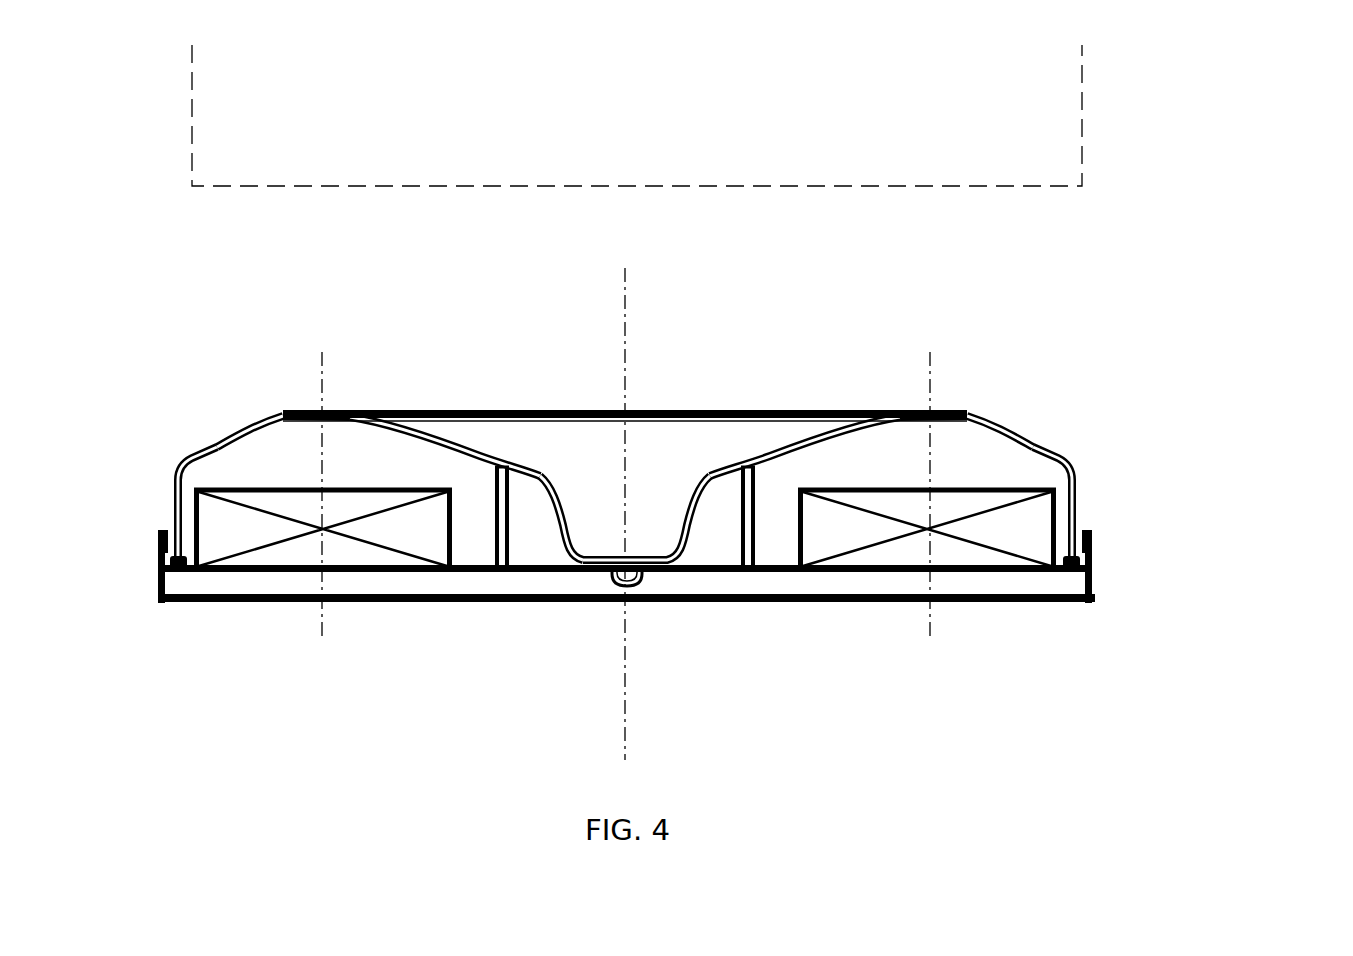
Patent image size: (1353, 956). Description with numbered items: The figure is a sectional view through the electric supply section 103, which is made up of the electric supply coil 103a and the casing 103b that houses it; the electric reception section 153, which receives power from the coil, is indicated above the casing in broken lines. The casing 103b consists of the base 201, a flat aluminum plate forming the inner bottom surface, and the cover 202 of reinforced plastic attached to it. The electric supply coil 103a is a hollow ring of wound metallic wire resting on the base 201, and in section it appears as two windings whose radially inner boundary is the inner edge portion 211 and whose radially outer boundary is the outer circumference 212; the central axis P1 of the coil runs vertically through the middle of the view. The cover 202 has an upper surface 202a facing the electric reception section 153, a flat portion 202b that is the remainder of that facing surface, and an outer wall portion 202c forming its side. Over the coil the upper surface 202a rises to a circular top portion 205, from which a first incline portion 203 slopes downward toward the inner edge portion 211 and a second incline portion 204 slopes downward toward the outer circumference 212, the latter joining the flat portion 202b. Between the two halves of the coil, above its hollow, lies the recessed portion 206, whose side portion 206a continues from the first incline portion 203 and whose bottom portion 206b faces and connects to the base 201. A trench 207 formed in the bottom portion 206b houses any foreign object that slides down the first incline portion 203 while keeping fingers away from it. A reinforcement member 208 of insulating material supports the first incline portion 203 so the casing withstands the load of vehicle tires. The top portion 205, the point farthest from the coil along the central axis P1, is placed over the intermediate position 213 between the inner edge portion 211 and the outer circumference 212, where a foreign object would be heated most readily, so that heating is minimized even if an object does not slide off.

The electric reception section 153 is at (1083, 127).
The electric supply section 103 is at (698, 312).
The electric supply coil 103a is at (305, 565).
The casing 103b is at (1230, 572).
The base 201 is at (1098, 599).
The cover 202 is at (645, 448).
The upper surface 202a is at (778, 438).
The flat portion 202b is at (176, 472).
The outer wall portion 202c is at (172, 505).
The first incline portion 203 is at (440, 410).
The second incline portion 204 is at (237, 431).
The top portion 205 is at (328, 410).
The recessed portion 206 is at (599, 429).
The side portion 206a is at (682, 518).
The bottom portion 206b is at (570, 478).
The trench 207 is at (618, 584).
The reinforcement member 208 is at (500, 562).
The inner edge portion 211 is at (450, 540).
The outer circumference 212 is at (203, 556).
The intermediate position 213 is at (327, 488).
The central axis P1 is at (628, 713).